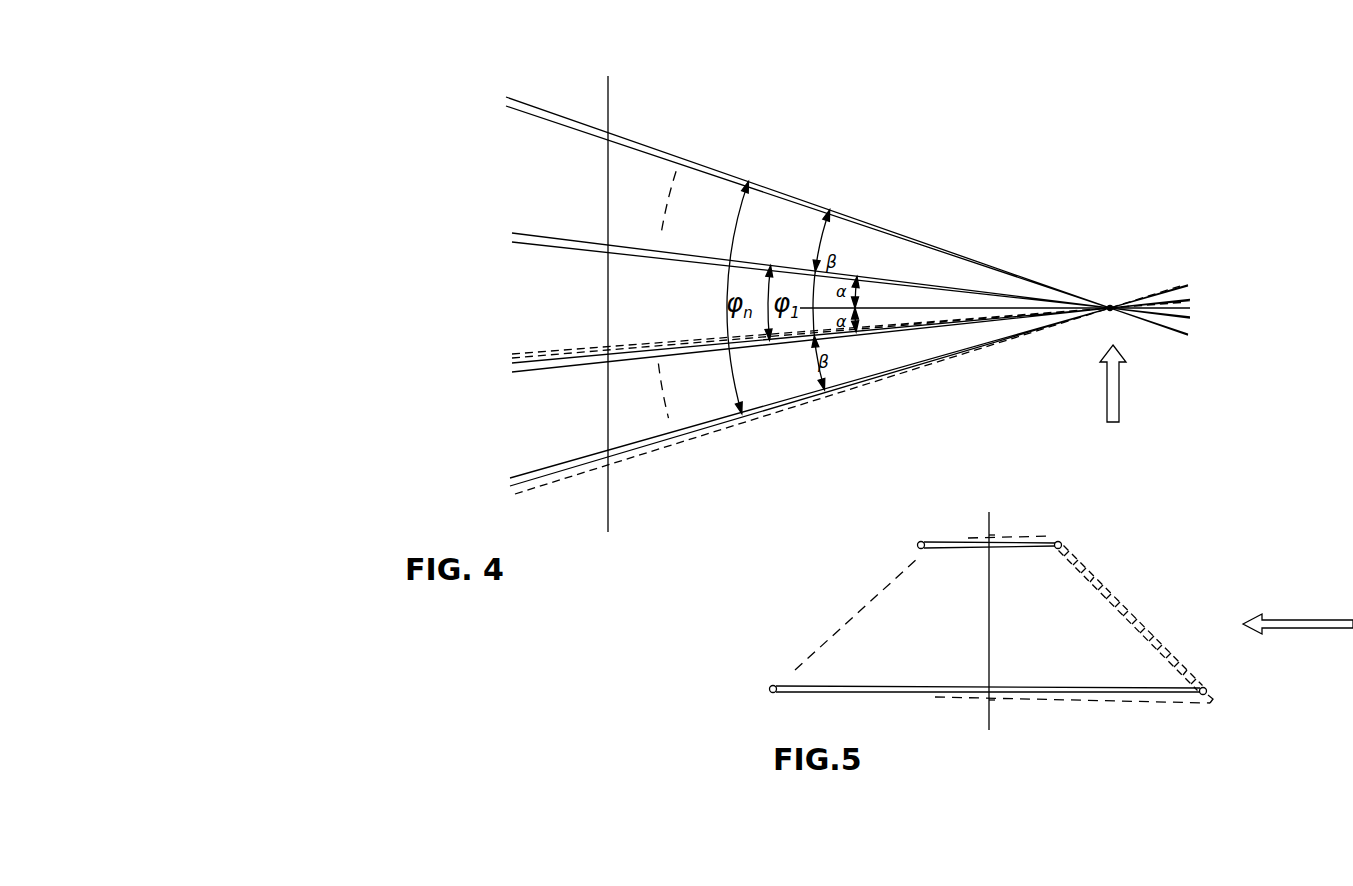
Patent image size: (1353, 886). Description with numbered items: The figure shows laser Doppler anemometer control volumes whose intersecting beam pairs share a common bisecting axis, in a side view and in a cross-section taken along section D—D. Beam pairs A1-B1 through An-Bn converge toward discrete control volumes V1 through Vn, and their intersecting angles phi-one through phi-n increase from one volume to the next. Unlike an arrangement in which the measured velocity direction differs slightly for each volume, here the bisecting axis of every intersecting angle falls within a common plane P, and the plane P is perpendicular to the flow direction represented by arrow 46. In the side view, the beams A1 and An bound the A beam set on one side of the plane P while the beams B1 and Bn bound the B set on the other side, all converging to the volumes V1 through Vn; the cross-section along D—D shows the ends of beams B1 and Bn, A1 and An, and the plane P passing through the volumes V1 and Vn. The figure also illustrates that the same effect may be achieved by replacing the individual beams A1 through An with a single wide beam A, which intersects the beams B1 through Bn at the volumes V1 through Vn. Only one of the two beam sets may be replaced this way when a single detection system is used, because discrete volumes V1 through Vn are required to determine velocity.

In FIG. 4, the arrow 46 is at (1119, 410).
In FIG. 5, the arrow 46 is at (1303, 620).
In FIG. 4, the section D— D is at (645, 532).
In FIG. 4, the beam Bn is at (558, 108).
In FIG. 5, the beam Bn is at (774, 686).
In FIG. 4, the beam B1 is at (524, 235).
In FIG. 5, the beam B1 is at (918, 540).
In FIG. 4, the beam A1 is at (521, 372).
In FIG. 5, the beam A1 is at (1063, 543).
In FIG. 4, the single wide beam A is at (552, 357).
In FIG. 5, the single wide beam A is at (1140, 625).
In FIG. 4, the beam An is at (534, 474).
In FIG. 5, the beam An is at (1208, 688).
In FIG. 4, the common plane P is at (904, 302).
In FIG. 5, the common plane P is at (990, 622).
In FIG. 4, the control volume V1 is at (1111, 303).
In FIG. 5, the control volume V1 is at (990, 535).
In FIG. 5, the control volume Vn is at (988, 700).